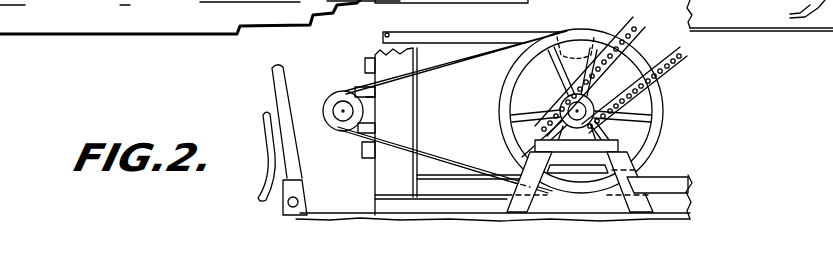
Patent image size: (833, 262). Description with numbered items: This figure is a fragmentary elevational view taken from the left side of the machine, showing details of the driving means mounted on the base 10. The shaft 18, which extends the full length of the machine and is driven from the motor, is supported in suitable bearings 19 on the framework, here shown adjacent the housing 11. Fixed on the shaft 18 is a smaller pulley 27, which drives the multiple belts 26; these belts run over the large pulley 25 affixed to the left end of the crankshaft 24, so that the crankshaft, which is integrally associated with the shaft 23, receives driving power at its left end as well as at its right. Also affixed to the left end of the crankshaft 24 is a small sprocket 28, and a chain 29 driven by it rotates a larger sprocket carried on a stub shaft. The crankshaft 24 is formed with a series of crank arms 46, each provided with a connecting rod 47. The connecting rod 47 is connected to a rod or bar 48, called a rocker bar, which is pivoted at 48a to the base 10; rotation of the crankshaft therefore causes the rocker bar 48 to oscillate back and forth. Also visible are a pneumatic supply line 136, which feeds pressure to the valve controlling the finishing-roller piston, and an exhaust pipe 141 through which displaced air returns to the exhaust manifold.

The base 10 is at (138, 22).
The motor housing 11 is at (372, 55).
The shaft 18 is at (343, 94).
The bearings 19 is at (375, 97).
The shaft 23 is at (530, 146).
The crank shaft mechanism 24 is at (565, 68).
The large pulley 25 is at (497, 100).
The belts 26 is at (431, 150).
The smaller pulley 27 is at (333, 126).
The small sprocket 28 is at (586, 101).
The chain 29 is at (670, 62).
The crank arms 46 is at (572, 42).
The connecting rod 47 is at (488, 20).
The rocker bar 48 is at (280, 107).
The pivot 48a is at (332, 196).
The supply line 136 is at (266, 162).
The exhaust pipe 141 is at (265, 128).